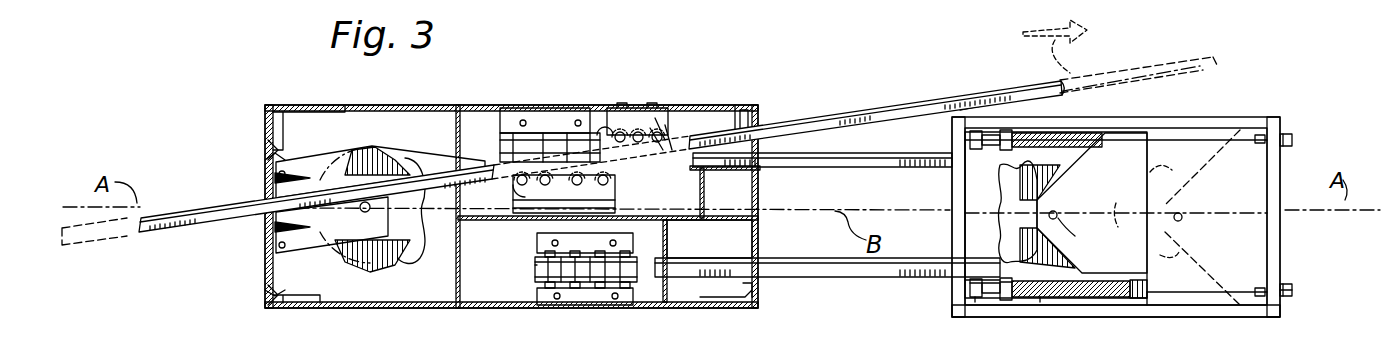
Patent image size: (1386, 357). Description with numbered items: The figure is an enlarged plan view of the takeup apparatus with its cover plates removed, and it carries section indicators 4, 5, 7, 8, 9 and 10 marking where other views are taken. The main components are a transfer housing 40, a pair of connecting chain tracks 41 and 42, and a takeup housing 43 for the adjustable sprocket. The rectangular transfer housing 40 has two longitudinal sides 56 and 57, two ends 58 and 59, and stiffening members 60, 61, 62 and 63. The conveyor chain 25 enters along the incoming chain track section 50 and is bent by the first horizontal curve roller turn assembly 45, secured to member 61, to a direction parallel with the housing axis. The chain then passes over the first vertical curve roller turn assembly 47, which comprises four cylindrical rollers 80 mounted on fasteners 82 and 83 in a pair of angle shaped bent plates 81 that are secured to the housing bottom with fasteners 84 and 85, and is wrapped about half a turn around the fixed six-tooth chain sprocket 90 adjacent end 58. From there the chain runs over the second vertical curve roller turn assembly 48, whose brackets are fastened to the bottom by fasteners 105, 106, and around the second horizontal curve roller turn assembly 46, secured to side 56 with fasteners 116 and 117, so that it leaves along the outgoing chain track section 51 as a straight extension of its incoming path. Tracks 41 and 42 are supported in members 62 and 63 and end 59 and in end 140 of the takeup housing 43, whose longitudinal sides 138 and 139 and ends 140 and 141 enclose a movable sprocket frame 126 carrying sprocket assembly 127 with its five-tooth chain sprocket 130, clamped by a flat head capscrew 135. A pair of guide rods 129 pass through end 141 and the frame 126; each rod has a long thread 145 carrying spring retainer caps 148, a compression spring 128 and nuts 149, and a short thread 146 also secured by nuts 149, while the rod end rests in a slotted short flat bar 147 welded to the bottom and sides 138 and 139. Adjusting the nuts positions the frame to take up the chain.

The section line 4- 4 is at (224, 217).
The section line 5- 5 is at (215, 160).
The section line 7- 7 is at (264, 232).
The section line 8- 8 is at (834, 183).
The section line 9- 9 is at (679, 160).
The section line 10- 10 is at (922, 136).
The conveyor chain 25 is at (70, 248).
The transfer housing 40 is at (295, 100).
The connecting chain track 41 is at (883, 176).
The connecting chain track 42 is at (890, 290).
The takeup housing 43 is at (1095, 322).
The first horizontal curve roller turn assembly 45 is at (595, 200).
The second horizontal curve roller turn assembly 46 is at (640, 118).
The first vertical curve roller turn assembly 47 is at (610, 300).
The second vertical curve roller turn assembly 48 is at (538, 108).
The incoming chain track section 50 is at (445, 150).
The outgoing chain track section 51 is at (832, 70).
The longitudinal side 56 is at (480, 104).
The longitudinal side 57 is at (675, 310).
The end 58 is at (266, 290).
The end 59 is at (746, 226).
The stiffening member 60 is at (461, 310).
The stiffening member 61 is at (477, 222).
The stiffening member 62 is at (706, 190).
The stiffening member 63 is at (668, 226).
The anti-friction bearing cylindrical roller 80 is at (537, 270).
The angle shaped bent plate 81 is at (636, 240).
The fastener 82 is at (545, 300).
The fastener 83 is at (540, 238).
The fastener 84 is at (555, 298).
The fastener 85 is at (587, 311).
The six-tooth chain sprocket 90 is at (362, 275).
The fastener 105 is at (578, 120).
The bolt hole 106 is at (601, 88).
The fastener 116 is at (660, 100).
The fastener 117 is at (686, 96).
The movable sprocket frame 126 is at (1150, 180).
The sprocket assembly 127 is at (1000, 226).
The compression spring 128 is at (1075, 300).
The guide rod 129 is at (1160, 300).
The five-tooth chain sprocket 130 is at (1012, 196).
The flat head capscrew 135 is at (1135, 230).
The longitudinal side 138 is at (1255, 100).
The longitudinal side 139 is at (1240, 317).
The end 140 is at (952, 228).
The end 141 is at (1276, 182).
The long thread 145 is at (968, 292).
The short thread 146 is at (1262, 290).
The short flat bar 147 is at (984, 305).
The spring retainer cap 148 is at (1075, 302).
The nut 149 is at (1318, 320).